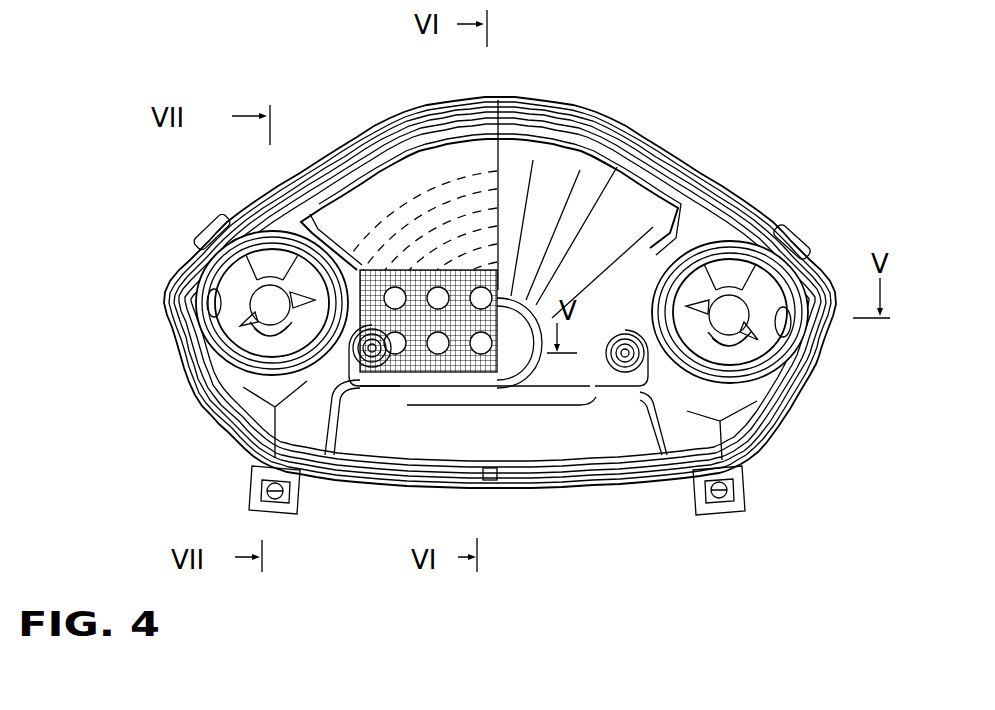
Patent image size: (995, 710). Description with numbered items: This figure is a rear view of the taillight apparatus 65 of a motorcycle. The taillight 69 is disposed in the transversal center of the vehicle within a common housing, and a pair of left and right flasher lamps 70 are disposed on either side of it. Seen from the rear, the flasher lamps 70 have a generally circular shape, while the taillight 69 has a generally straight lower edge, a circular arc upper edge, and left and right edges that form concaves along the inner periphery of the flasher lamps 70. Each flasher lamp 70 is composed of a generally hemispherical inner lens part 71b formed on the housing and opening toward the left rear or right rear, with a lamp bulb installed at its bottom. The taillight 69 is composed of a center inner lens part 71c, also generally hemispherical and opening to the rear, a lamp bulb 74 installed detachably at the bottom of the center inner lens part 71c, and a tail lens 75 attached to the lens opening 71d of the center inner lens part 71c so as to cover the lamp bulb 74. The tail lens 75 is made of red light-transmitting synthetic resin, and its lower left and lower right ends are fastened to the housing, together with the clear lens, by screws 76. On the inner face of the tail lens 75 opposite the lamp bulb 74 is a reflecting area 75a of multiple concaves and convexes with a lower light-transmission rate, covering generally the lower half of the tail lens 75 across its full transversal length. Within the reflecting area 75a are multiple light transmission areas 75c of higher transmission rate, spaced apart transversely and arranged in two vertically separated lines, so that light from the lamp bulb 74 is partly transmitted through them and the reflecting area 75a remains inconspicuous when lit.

The taillight apparatus 65 is at (751, 139).
The taillight 69 is at (571, 428).
The flasher lamps 70 is at (249, 375).
The inner lens parts 71b is at (214, 320).
The center inner lens part 71c is at (590, 148).
The lens opening 71d is at (602, 180).
The lamp bulb 74 is at (527, 387).
The tail lens 75 is at (404, 153).
The reflecting area 75a is at (441, 378).
The light transmission areas 75c is at (466, 272).
The screws 76 is at (375, 388).